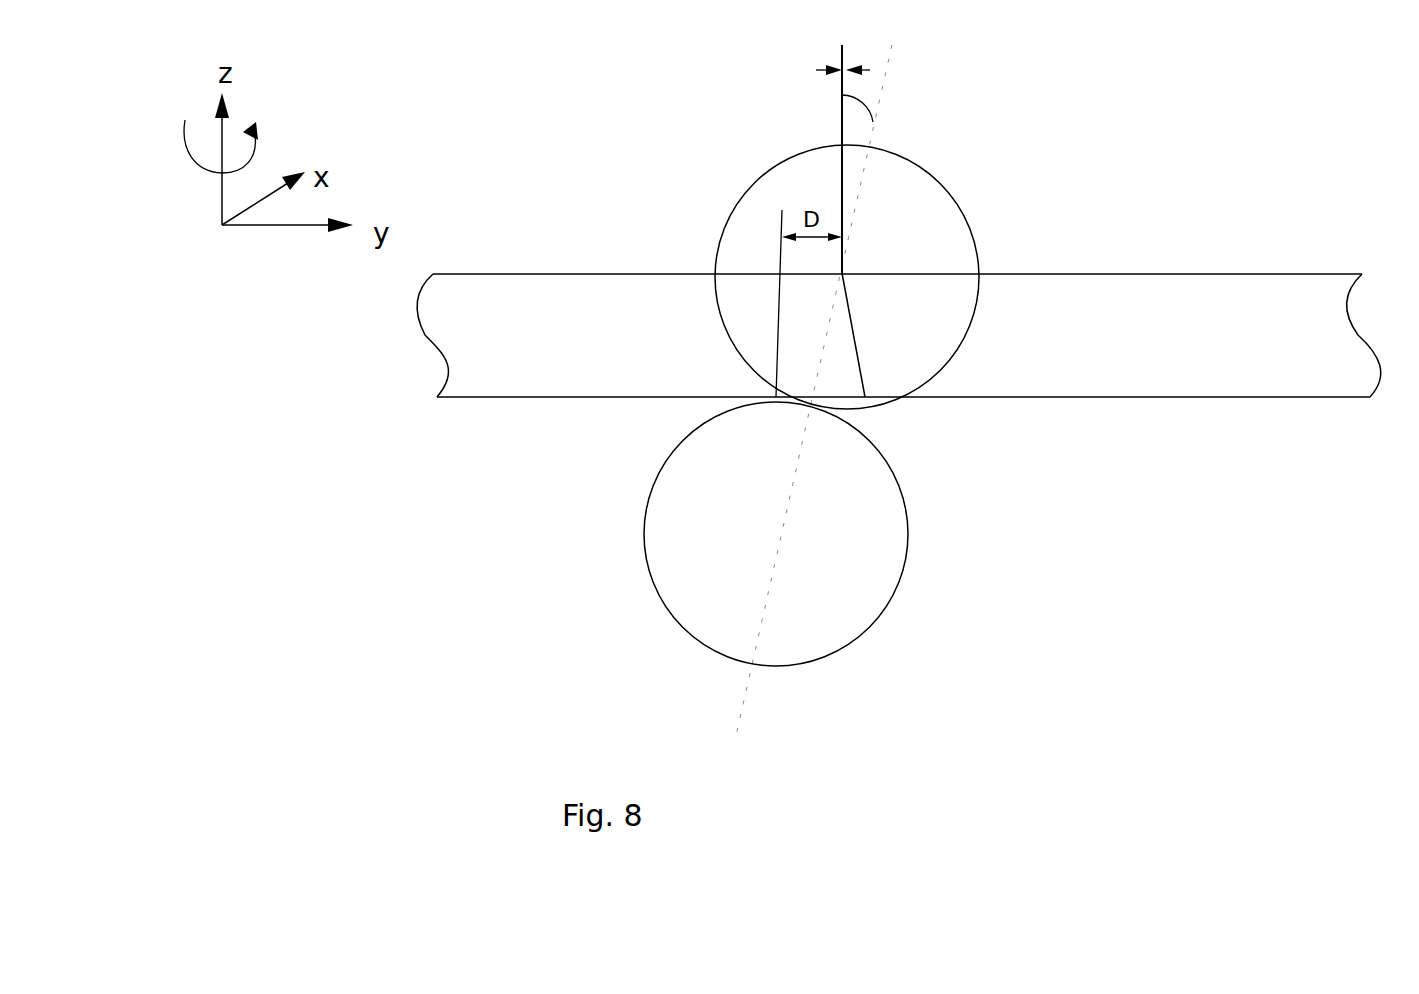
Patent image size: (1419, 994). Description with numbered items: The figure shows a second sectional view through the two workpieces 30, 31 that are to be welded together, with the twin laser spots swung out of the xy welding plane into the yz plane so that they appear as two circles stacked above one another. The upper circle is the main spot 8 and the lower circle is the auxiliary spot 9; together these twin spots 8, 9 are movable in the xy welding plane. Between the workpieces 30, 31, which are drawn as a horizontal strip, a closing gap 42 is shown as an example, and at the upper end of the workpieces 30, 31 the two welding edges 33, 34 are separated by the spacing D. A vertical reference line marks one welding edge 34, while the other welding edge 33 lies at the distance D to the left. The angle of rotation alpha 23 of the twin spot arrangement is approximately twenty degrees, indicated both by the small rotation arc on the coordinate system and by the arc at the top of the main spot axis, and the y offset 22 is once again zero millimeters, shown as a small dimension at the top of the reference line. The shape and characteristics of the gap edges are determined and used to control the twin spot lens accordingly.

The main spot 8 is at (955, 242).
The auxiliary spot 9 is at (813, 543).
The y offset 22 is at (840, 78).
The angle of rotation alpha 23 is at (258, 140).
The workpiece 30 is at (557, 333).
The workpiece 31 is at (1315, 332).
The welding edge 33 is at (780, 270).
The welding edge 34 is at (842, 273).
The closing gap 42 is at (800, 323).